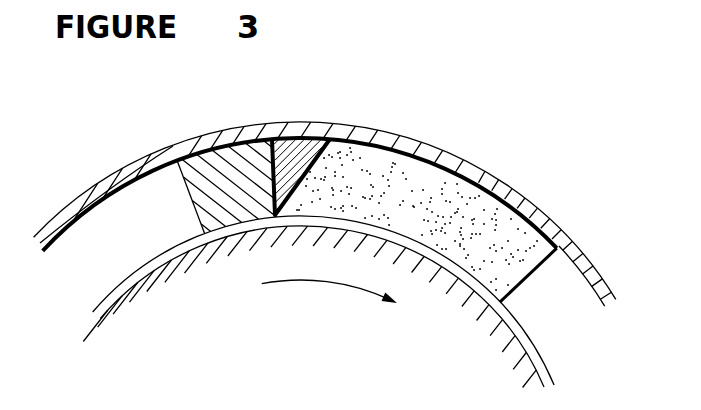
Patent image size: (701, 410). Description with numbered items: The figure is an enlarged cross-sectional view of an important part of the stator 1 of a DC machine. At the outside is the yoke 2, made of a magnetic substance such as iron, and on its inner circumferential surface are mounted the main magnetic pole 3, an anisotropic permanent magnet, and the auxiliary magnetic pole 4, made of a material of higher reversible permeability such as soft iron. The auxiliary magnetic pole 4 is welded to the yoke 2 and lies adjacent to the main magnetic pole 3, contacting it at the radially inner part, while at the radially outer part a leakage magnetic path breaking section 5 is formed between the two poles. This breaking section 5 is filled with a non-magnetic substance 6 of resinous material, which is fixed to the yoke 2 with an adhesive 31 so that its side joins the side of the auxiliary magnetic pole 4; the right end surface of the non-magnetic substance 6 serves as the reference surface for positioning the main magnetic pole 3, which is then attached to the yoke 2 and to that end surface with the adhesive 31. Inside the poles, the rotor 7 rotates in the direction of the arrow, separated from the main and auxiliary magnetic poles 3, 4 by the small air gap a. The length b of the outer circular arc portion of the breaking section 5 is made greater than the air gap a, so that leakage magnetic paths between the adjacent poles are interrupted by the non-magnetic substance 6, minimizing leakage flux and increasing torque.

The stator 1 is at (486, 164).
The yoke 2 is at (184, 143).
The main magnetic pole 3 is at (378, 178).
The auxiliary magnetic pole 4 is at (219, 172).
The leakage magnetic path breaking section 5 is at (339, 124).
The non-magnetic substance 6 is at (297, 195).
The rotor 7 is at (523, 340).
The adhesive 31 is at (546, 226).
The air gap a is at (185, 290).
The length of outer circular arc portion b is at (265, 75).